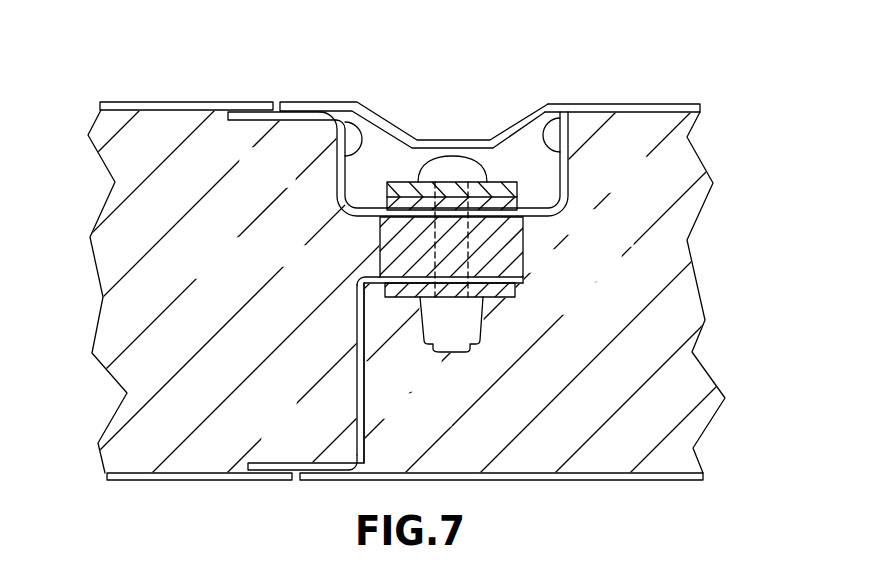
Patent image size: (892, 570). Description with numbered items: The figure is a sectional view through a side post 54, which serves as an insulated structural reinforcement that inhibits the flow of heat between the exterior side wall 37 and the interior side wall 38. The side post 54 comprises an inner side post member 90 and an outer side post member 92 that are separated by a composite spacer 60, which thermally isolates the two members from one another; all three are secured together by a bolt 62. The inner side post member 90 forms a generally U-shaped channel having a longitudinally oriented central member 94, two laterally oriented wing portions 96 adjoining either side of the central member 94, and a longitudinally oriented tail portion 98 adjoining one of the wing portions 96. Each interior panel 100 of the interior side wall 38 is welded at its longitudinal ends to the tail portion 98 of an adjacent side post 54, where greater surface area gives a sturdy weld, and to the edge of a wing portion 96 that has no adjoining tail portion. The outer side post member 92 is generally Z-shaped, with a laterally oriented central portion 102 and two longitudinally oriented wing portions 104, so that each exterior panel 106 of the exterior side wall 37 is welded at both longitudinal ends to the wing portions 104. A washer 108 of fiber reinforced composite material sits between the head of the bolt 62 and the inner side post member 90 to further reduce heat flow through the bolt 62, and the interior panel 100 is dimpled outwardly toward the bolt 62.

The exterior side wall 37 is at (128, 90).
The interior side wall 38 is at (662, 481).
The side post 54 is at (331, 252).
The composite spacer 60 is at (526, 258).
The bolt 62 is at (452, 156).
The inner side post member 90 is at (548, 104).
The outer side post member 92 is at (366, 370).
The central member 94 is at (550, 217).
The wing portion 96 is at (363, 109).
The tail portion 98 is at (263, 121).
The interior panel 100 is at (170, 101).
The central portion 102 is at (385, 373).
The wing portion 104 is at (526, 283).
The exterior panel 106 is at (185, 481).
The washer 108 is at (512, 181).